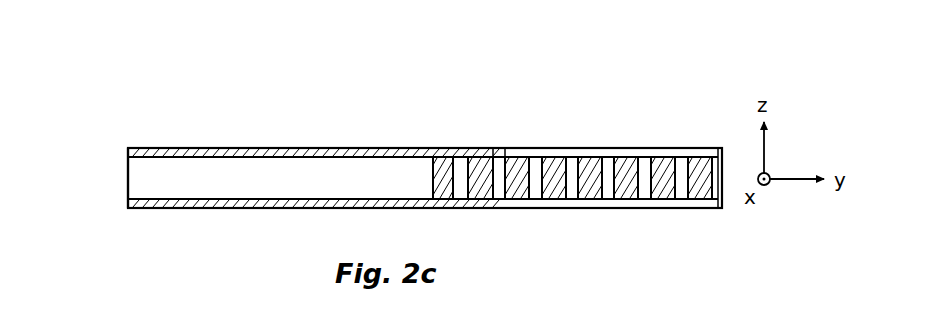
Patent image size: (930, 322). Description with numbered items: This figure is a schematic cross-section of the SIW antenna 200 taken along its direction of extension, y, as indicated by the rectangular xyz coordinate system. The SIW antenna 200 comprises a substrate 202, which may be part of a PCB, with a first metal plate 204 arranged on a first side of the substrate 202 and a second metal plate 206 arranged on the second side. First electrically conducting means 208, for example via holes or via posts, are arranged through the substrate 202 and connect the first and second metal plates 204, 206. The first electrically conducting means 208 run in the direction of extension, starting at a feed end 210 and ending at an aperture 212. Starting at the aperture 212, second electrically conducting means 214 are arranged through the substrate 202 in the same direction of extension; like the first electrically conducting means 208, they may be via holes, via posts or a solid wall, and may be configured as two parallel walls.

The SIW antenna 200 is at (262, 84).
The substrate 202 is at (165, 165).
The first metal plate 204 is at (222, 148).
The second metal plate 206 is at (225, 208).
The first electrically conducting means 208 is at (445, 160).
The feed end 210 is at (127, 179).
The aperture 212 is at (499, 175).
The second electrically conducting means 214 is at (628, 162).